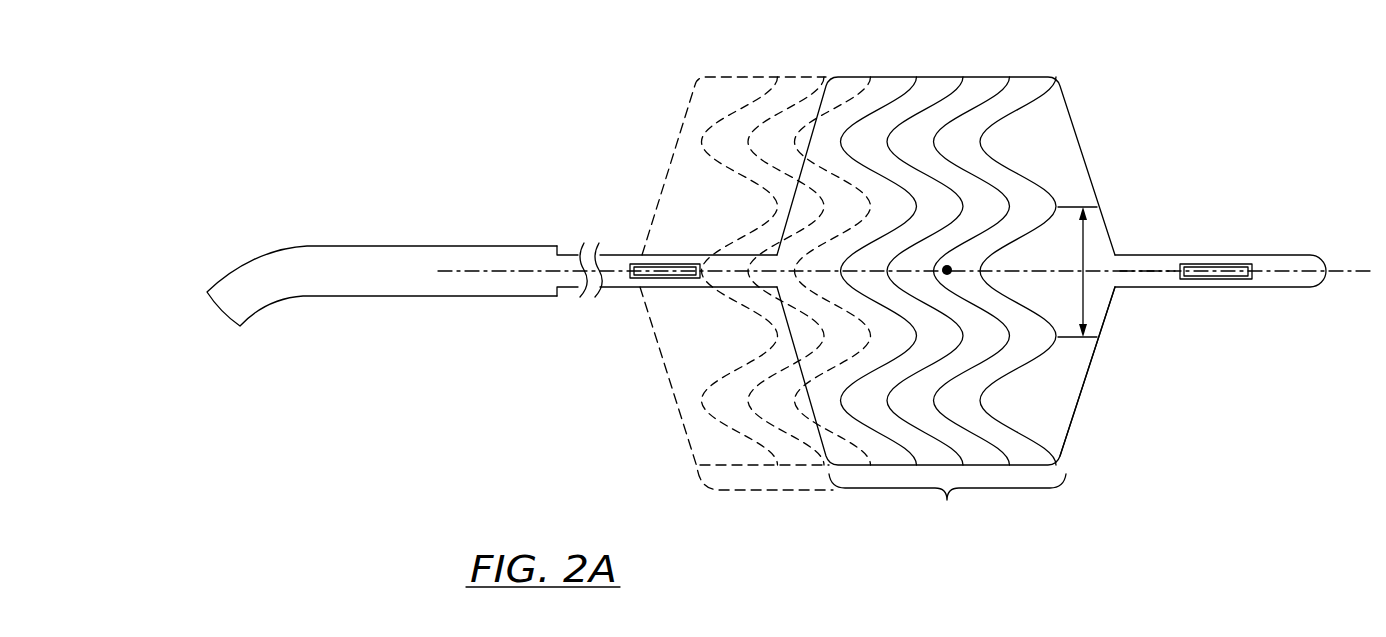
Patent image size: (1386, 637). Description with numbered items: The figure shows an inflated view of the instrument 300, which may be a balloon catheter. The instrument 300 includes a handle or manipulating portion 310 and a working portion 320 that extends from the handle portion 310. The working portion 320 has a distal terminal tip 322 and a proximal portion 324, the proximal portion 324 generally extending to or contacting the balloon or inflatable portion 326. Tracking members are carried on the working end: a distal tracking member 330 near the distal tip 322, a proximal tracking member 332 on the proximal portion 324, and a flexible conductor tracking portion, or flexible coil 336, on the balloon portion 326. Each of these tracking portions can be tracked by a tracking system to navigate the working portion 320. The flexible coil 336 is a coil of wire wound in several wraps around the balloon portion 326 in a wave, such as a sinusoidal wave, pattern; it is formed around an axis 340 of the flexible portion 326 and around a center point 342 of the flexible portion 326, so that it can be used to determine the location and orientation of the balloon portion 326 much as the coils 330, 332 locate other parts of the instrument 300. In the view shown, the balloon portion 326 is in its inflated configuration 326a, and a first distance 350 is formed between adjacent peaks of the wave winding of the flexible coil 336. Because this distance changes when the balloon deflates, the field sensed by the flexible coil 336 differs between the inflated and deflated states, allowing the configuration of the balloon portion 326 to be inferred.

The instrument 300 is at (1196, 73).
The handle or manipulating portion 310 is at (286, 309).
The working portion 320 is at (981, 52).
The distal terminal tip 322 is at (1300, 281).
The proximal portion 324 is at (610, 282).
The balloon or inflatable portion 326 is at (947, 507).
The inflated configuration 326a is at (1095, 396).
The distal tracking member 330 is at (1228, 284).
The proximal tracking member 332 is at (680, 288).
The flexible conductor tracking portion (flexible coil) 336 is at (693, 143).
The axis 340 is at (1150, 278).
The center point 342 is at (946, 266).
The first distance 350 is at (1085, 204).